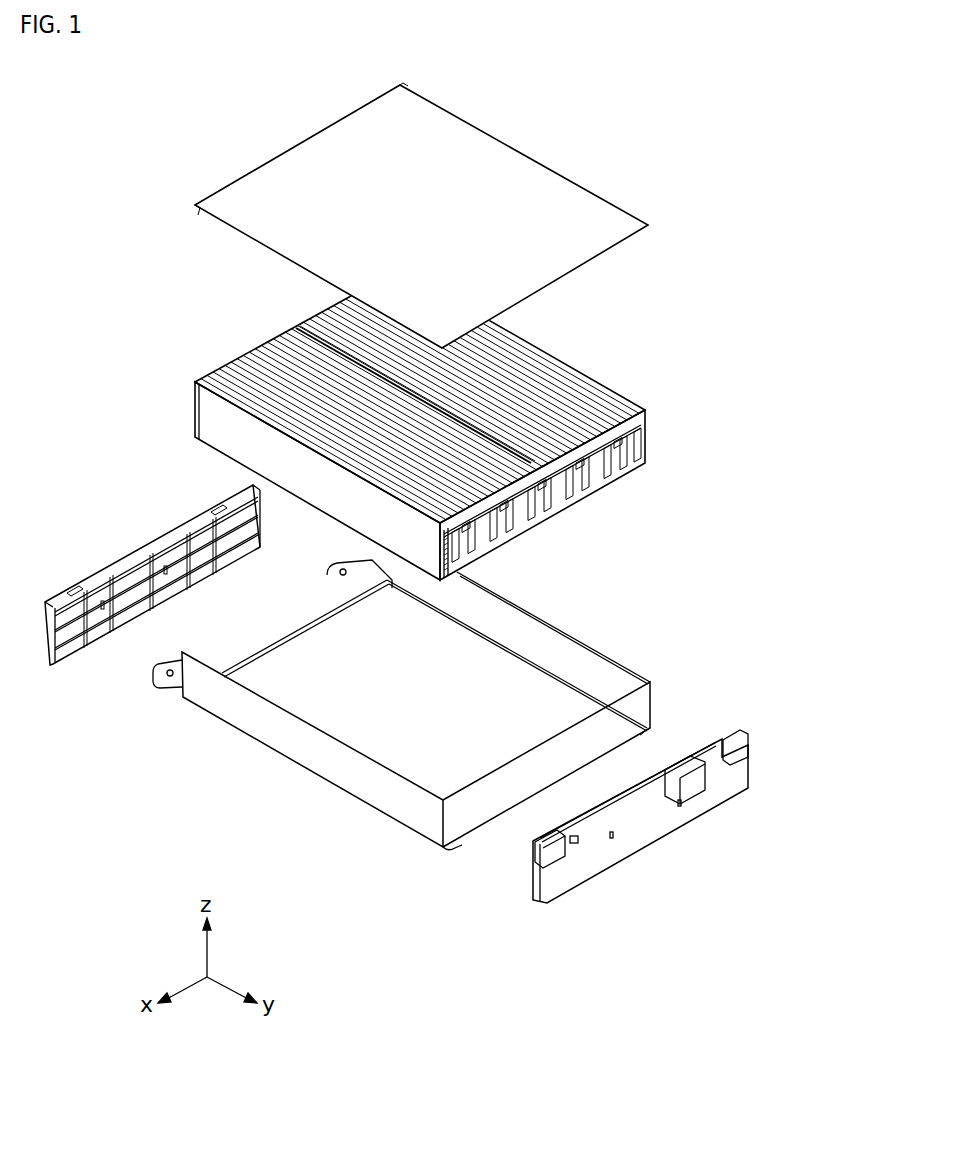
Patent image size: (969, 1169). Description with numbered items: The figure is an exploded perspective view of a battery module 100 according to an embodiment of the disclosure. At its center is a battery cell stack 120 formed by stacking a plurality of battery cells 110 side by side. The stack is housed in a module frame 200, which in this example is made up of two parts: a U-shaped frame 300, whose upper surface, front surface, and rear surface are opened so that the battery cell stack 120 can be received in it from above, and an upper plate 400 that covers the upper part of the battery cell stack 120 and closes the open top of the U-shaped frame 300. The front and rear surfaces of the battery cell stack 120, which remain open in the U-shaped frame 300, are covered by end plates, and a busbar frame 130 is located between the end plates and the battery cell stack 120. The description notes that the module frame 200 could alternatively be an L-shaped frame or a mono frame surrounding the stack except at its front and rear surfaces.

The battery module 100 is at (155, 107).
The battery cell 110 is at (230, 438).
The battery cell stack 120 is at (586, 362).
The busbar frame 130 is at (648, 436).
The module frame 200 is at (401, 705).
The U-shaped frame 300 is at (323, 766).
The upper plate 400 is at (417, 435).